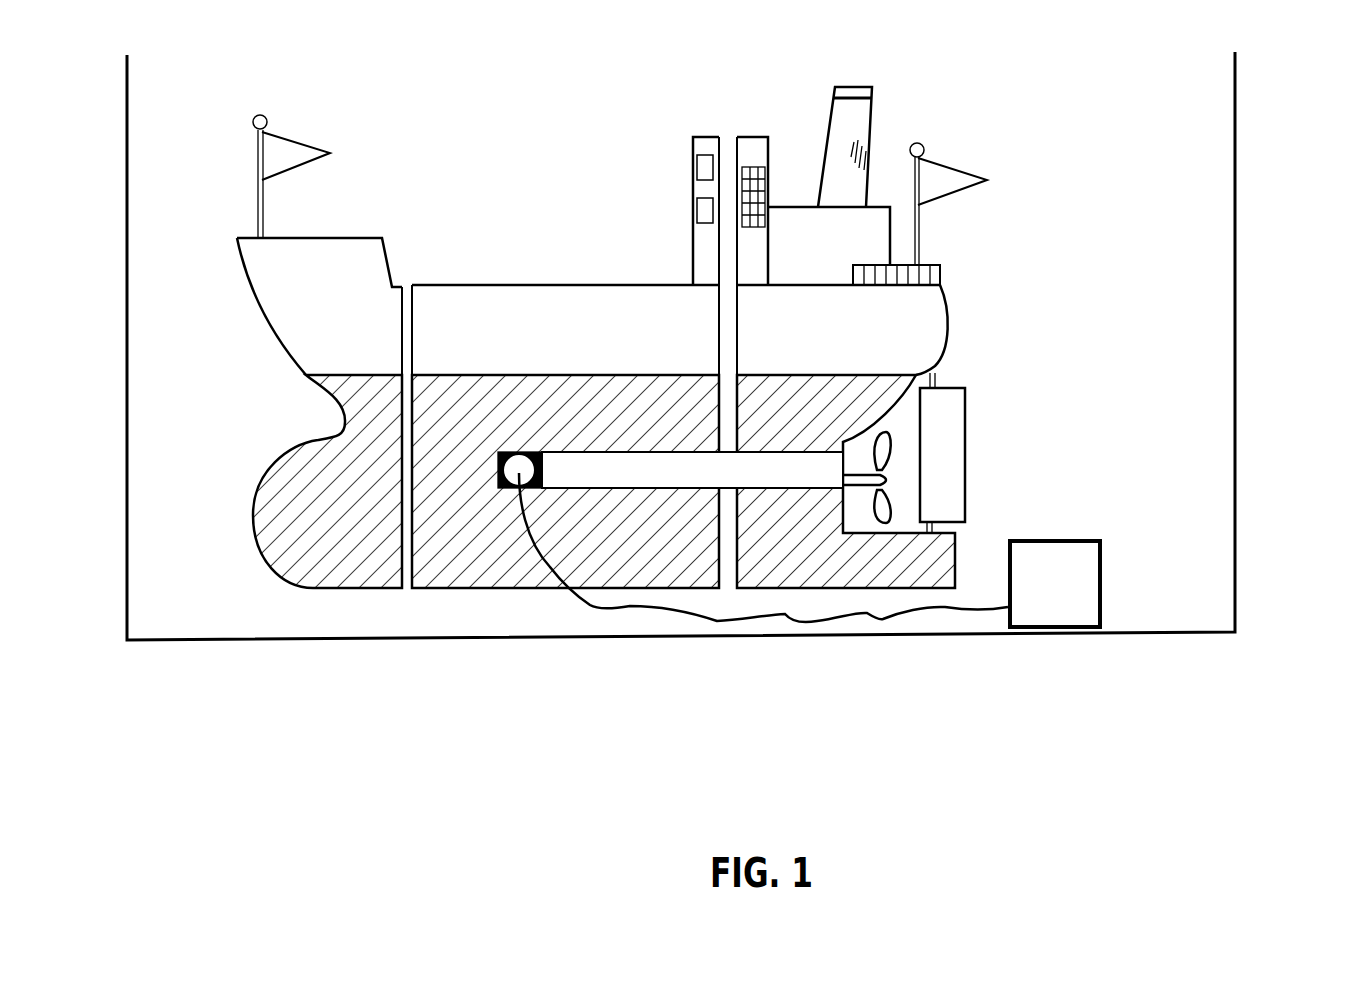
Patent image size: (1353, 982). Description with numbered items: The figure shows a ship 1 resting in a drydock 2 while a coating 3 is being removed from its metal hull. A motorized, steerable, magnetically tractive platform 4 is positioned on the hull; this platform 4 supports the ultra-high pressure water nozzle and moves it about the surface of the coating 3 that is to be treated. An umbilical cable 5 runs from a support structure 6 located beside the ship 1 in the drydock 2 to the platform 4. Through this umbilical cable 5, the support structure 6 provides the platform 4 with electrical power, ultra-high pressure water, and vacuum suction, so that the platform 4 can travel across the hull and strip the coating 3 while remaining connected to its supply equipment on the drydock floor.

The ship 1 is at (612, 399).
The drydock 2 is at (1237, 373).
The coating 3 is at (480, 418).
The magnetically tractive platform 4 is at (524, 452).
The umbilical cable 5 is at (942, 608).
The support structure 6 is at (1055, 584).